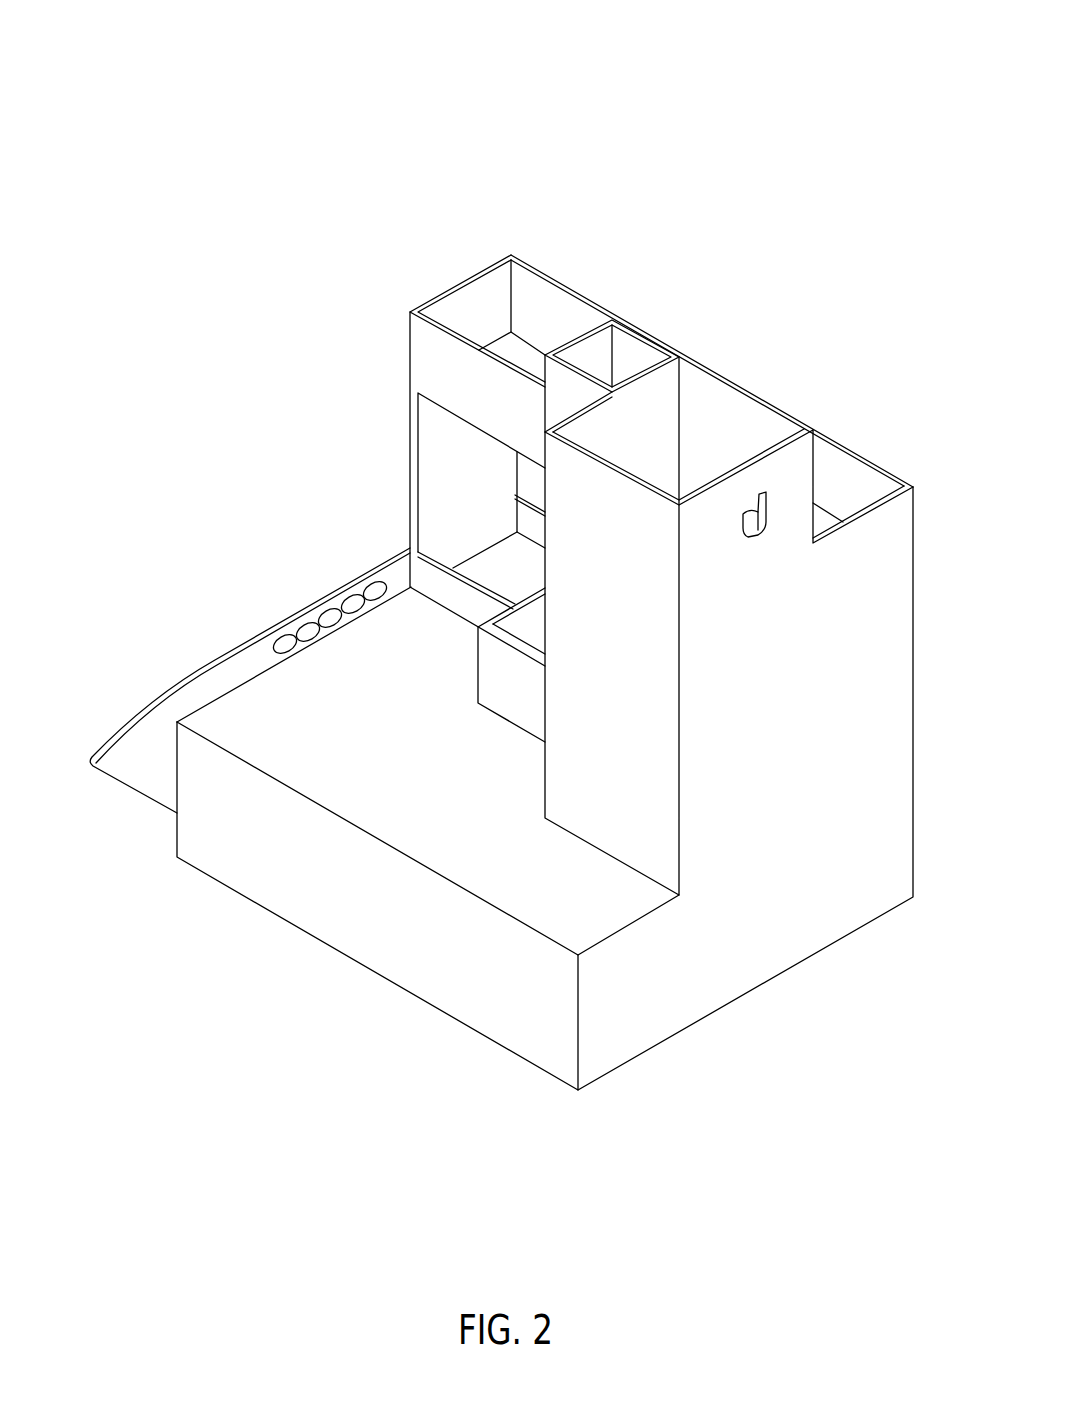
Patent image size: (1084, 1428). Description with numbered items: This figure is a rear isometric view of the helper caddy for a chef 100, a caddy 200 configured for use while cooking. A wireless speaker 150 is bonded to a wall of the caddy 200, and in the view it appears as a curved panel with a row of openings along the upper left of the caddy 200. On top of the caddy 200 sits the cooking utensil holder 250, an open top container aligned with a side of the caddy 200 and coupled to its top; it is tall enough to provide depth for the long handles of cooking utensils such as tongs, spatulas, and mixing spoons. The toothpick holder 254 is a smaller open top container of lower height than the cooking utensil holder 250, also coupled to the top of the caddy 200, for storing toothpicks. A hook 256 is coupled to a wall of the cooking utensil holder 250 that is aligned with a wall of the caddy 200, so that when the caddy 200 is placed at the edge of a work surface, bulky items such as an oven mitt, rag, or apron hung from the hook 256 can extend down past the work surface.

The helper caddy for a chef 100 is at (130, 183).
The wireless speaker 150 is at (148, 747).
The caddy 200 is at (318, 908).
The cooking utensil holder 250 is at (588, 440).
The toothpick holder 254 is at (487, 645).
The hook 256 is at (755, 522).